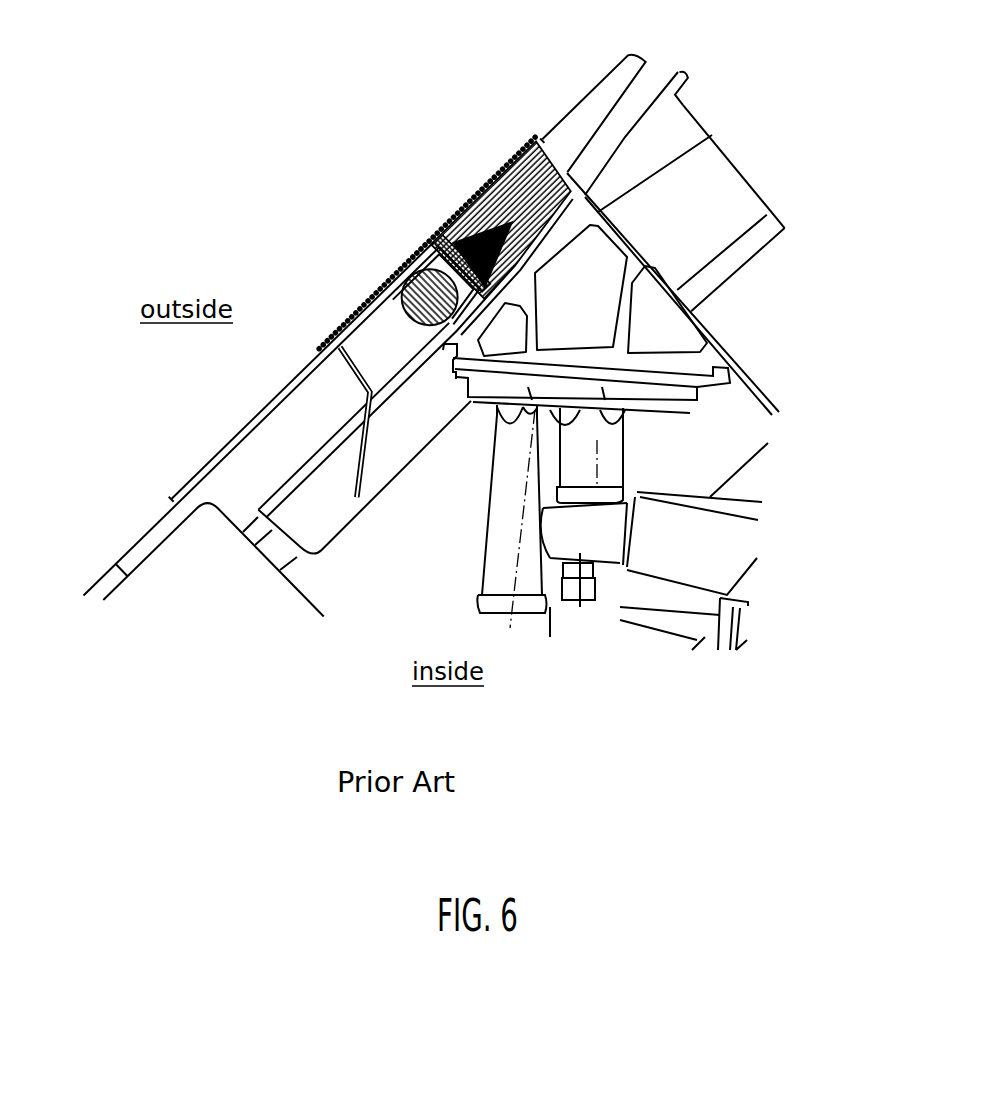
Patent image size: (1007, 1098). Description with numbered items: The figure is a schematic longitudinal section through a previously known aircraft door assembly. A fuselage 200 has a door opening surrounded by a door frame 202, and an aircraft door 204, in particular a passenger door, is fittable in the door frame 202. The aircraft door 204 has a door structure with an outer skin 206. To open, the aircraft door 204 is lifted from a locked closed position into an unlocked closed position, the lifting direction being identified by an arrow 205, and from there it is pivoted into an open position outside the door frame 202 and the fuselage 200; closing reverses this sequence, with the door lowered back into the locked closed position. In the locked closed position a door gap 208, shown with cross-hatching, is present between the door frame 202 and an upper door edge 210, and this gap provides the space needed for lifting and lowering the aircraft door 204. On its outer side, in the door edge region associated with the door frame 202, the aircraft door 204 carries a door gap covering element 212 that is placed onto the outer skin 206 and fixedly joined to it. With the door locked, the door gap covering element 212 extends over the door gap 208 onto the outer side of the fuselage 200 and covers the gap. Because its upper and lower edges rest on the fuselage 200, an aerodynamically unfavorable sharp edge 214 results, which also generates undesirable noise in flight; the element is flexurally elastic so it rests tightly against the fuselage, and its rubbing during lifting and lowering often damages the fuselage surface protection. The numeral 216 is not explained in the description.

The fuselage 200 is at (600, 93).
The door frame 202 is at (680, 247).
The aircraft door 204 is at (215, 427).
The arrow 205 is at (520, 267).
The outer skin 206 is at (142, 528).
The door gap 208 is at (537, 200).
The upper door edge 210 is at (437, 232).
The door gap covering element 212 is at (455, 210).
The sharp edge 214 is at (543, 138).
The sealing strip end 216 is at (537, 133).